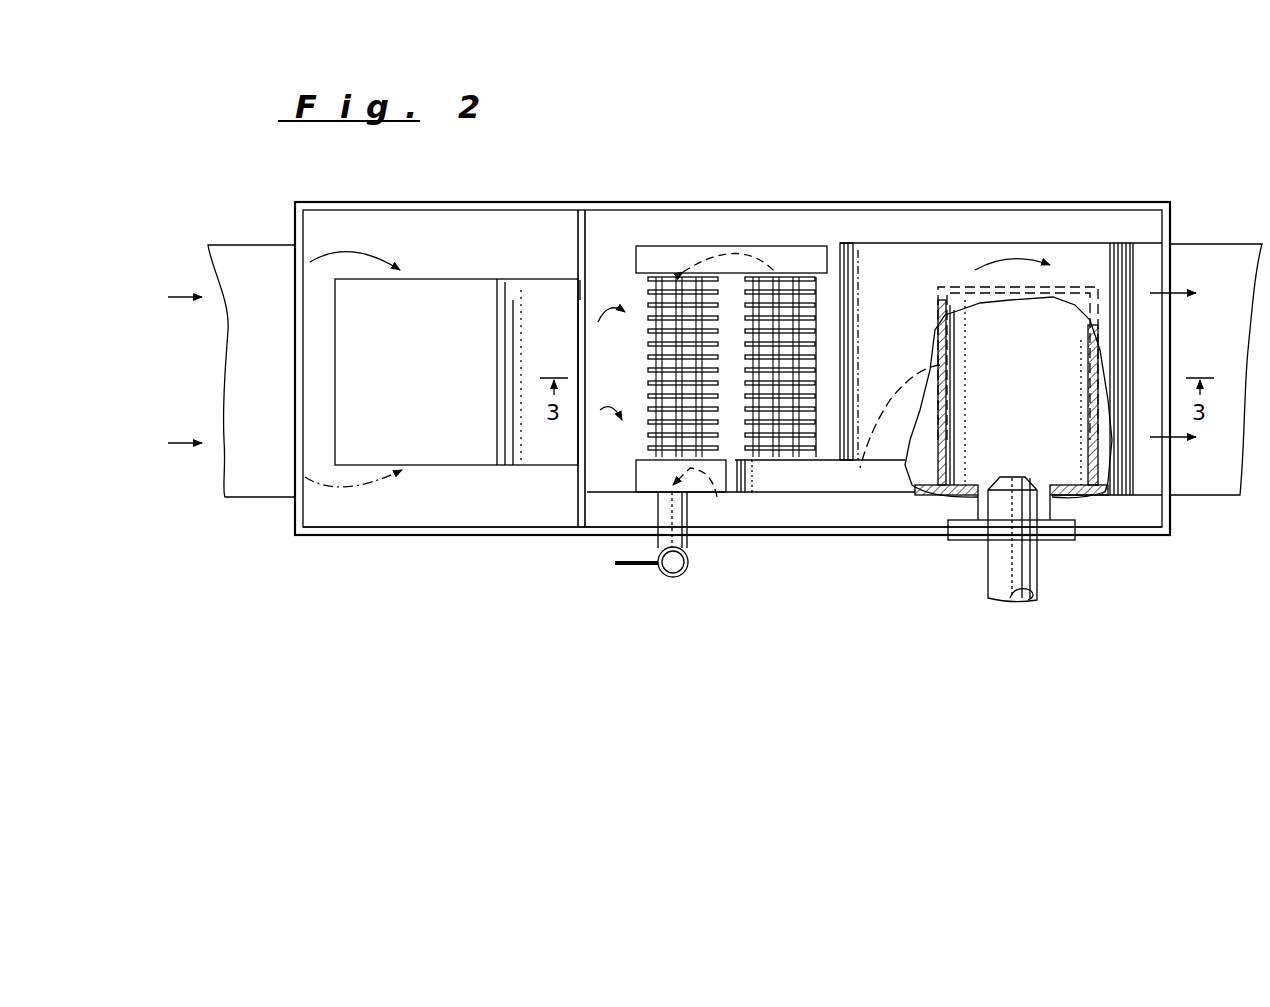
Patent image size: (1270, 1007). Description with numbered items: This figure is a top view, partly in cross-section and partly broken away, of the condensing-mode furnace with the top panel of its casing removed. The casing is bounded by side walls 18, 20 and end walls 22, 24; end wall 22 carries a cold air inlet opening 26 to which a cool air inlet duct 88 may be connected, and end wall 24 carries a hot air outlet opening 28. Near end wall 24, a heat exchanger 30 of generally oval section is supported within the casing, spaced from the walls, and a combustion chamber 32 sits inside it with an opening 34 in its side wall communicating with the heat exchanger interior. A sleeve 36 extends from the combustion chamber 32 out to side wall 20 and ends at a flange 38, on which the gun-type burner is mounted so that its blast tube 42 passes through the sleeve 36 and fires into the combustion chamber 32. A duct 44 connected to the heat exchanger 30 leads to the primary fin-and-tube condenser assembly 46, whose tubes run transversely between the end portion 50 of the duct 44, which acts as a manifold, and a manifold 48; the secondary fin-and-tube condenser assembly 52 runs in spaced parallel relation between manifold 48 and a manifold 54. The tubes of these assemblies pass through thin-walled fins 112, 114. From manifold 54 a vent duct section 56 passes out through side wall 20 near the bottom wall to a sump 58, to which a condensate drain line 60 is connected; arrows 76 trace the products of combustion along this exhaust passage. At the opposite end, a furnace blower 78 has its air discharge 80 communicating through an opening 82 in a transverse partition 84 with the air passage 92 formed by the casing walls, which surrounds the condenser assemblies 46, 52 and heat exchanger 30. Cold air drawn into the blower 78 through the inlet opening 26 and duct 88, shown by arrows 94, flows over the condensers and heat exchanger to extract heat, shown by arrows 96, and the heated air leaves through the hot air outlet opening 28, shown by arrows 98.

The side wall 18 is at (876, 202).
The side wall 20 is at (832, 535).
The end wall 22 is at (295, 222).
The end wall 24 is at (1170, 216).
The cold air inlet opening 26 is at (300, 488).
The hot air outlet opening 28 is at (1163, 494).
The heat exchanger 30 is at (930, 304).
The combustion chamber 32 is at (1041, 422).
The opening 34 is at (945, 433).
The sleeve 36 is at (970, 512).
The flange 38 is at (1042, 540).
The blast tube 42 is at (1025, 477).
The duct 44 is at (886, 470).
The primary fin-and-tube condenser assembly 46 is at (845, 340).
The manifold 48 is at (698, 246).
The end portion of duct 50 is at (795, 470).
The secondary fin-and-tube condenser assembly 52 is at (650, 371).
The manifold 54 is at (636, 472).
The vent duct section 56 is at (658, 510).
The sump 58 is at (688, 566).
The condensate drain line 60 is at (630, 566).
The arrows 76 is at (745, 250).
The furnace blower 78 is at (383, 352).
The air discharge 80 is at (497, 279).
The opening 82 is at (586, 290).
The partition 84 is at (585, 230).
The cool air inlet duct 88 is at (250, 497).
The air passage 92 is at (936, 242).
The arrows 94 is at (344, 252).
The arrows 96 is at (600, 312).
The arrows 98 is at (1178, 292).
The fins 112 is at (820, 292).
The fins 114 is at (650, 333).